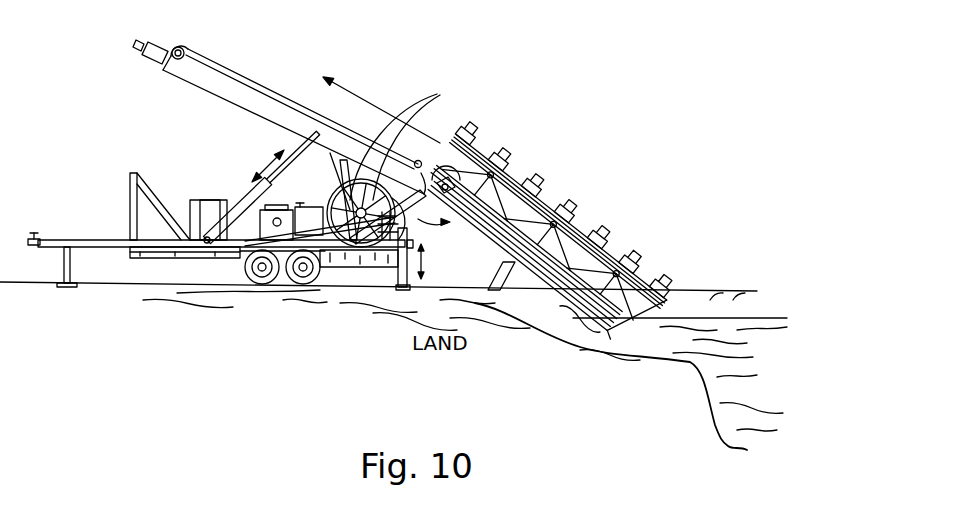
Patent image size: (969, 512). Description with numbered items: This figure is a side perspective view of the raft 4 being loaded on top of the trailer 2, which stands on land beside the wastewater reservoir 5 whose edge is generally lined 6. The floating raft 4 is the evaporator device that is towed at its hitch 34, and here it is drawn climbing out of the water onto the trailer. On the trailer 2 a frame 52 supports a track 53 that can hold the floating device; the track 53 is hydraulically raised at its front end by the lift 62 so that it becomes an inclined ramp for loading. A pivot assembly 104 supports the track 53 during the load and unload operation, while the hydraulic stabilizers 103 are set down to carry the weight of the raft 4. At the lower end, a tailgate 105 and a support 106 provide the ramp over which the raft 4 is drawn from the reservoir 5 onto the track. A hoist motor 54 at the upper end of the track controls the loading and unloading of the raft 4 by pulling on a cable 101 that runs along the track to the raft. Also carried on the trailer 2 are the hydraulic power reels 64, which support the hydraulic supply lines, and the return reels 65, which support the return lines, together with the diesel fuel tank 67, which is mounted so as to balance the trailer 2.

The trailer 2 is at (97, 241).
The raft 4 is at (593, 172).
The wastewater reservoir 5 is at (785, 362).
The liner 6 is at (668, 354).
The hitch 34 is at (438, 145).
The frame 52 is at (130, 180).
The track 53 is at (227, 100).
The hoist motor 54 is at (151, 52).
The lift 62 is at (250, 202).
The hydraulic power reels 64 is at (437, 94).
The return reels 65 is at (406, 147).
The diesel fuel tank 67 is at (313, 218).
The cable 101 is at (225, 72).
The hydraulic stabilizers 103 is at (403, 273).
The pivot assembly 104 is at (346, 186).
The tailgate 105 is at (490, 243).
The support 106 is at (497, 288).